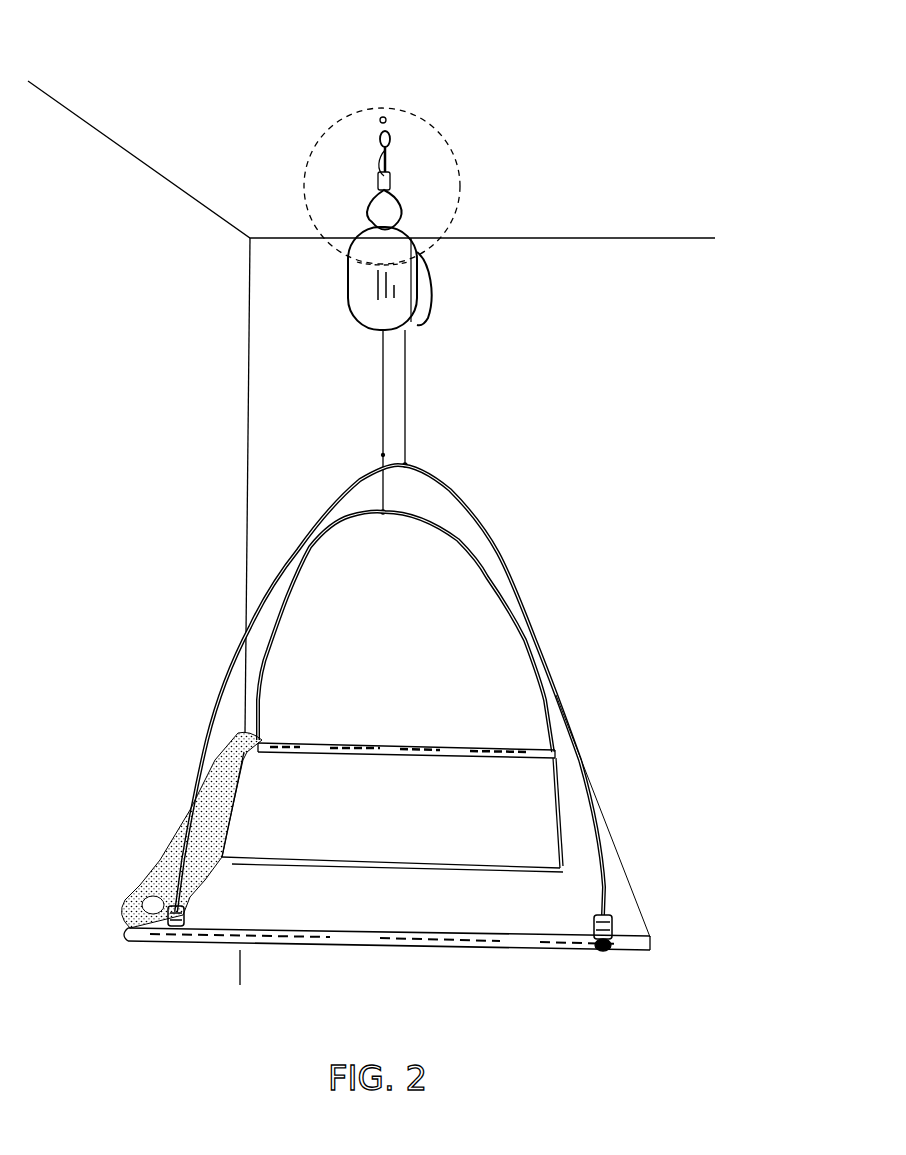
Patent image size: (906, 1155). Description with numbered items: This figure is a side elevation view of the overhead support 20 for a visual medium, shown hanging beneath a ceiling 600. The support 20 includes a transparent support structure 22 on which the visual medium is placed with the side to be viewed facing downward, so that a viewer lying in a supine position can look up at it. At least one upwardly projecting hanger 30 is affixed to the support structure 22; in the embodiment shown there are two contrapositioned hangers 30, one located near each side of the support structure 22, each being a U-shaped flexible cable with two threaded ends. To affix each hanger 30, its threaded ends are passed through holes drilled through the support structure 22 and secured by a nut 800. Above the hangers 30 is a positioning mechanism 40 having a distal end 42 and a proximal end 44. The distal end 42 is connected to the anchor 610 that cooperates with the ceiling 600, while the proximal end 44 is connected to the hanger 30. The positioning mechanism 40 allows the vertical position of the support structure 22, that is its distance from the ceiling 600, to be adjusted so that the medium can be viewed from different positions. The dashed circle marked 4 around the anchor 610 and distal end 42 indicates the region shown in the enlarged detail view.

The ceiling 600 is at (131, 83).
The distal end 42 is at (290, 200).
The anchor 610 is at (388, 121).
The FIG. 4 detail view indicator 4 is at (417, 118).
The positioning mechanism 40 is at (500, 281).
The support 20 is at (729, 392).
The proximal end 44 is at (474, 453).
The hanger 30 is at (518, 575).
The support structure 22 is at (625, 905).
The nut 800 is at (167, 943).